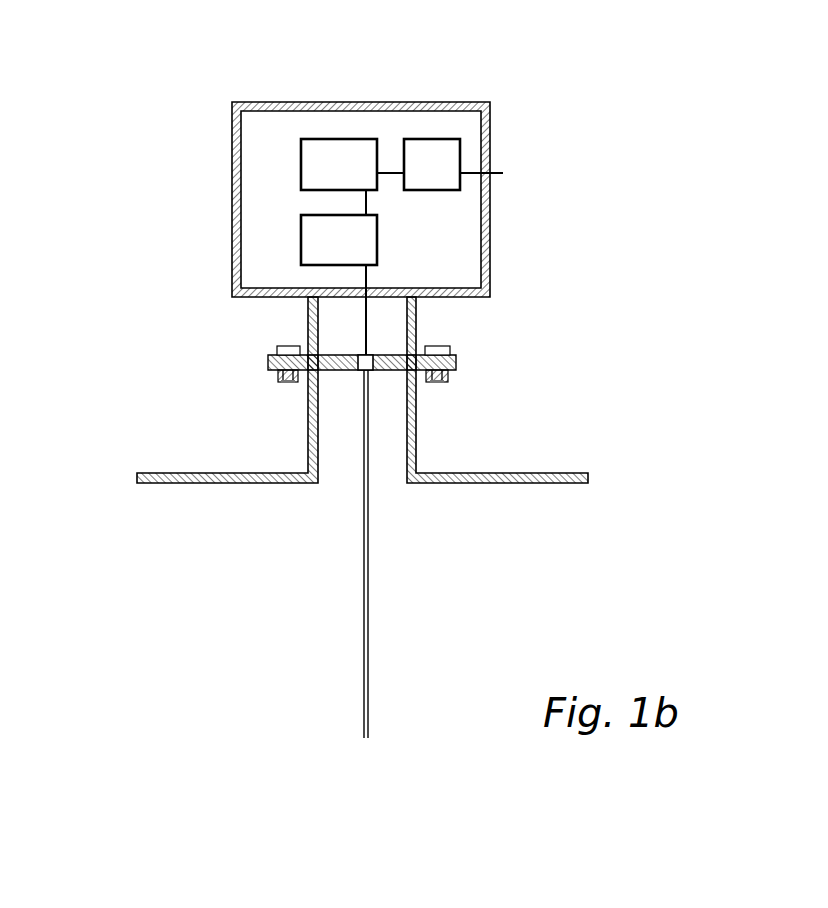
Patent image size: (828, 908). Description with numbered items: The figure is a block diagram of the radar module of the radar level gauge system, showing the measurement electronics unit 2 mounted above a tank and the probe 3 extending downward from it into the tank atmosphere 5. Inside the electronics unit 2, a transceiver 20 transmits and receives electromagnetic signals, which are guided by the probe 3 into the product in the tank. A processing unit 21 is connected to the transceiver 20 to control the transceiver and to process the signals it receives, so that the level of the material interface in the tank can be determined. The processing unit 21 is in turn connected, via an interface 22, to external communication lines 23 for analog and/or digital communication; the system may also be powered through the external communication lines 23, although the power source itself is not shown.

The measurement electronics unit 2 is at (286, 102).
The probe 3 is at (368, 587).
The tank atmosphere 5 is at (522, 473).
The transceiver 20 is at (377, 240).
The processing unit 21 is at (301, 170).
The interface 22 is at (433, 139).
The external communication lines 23 is at (499, 176).